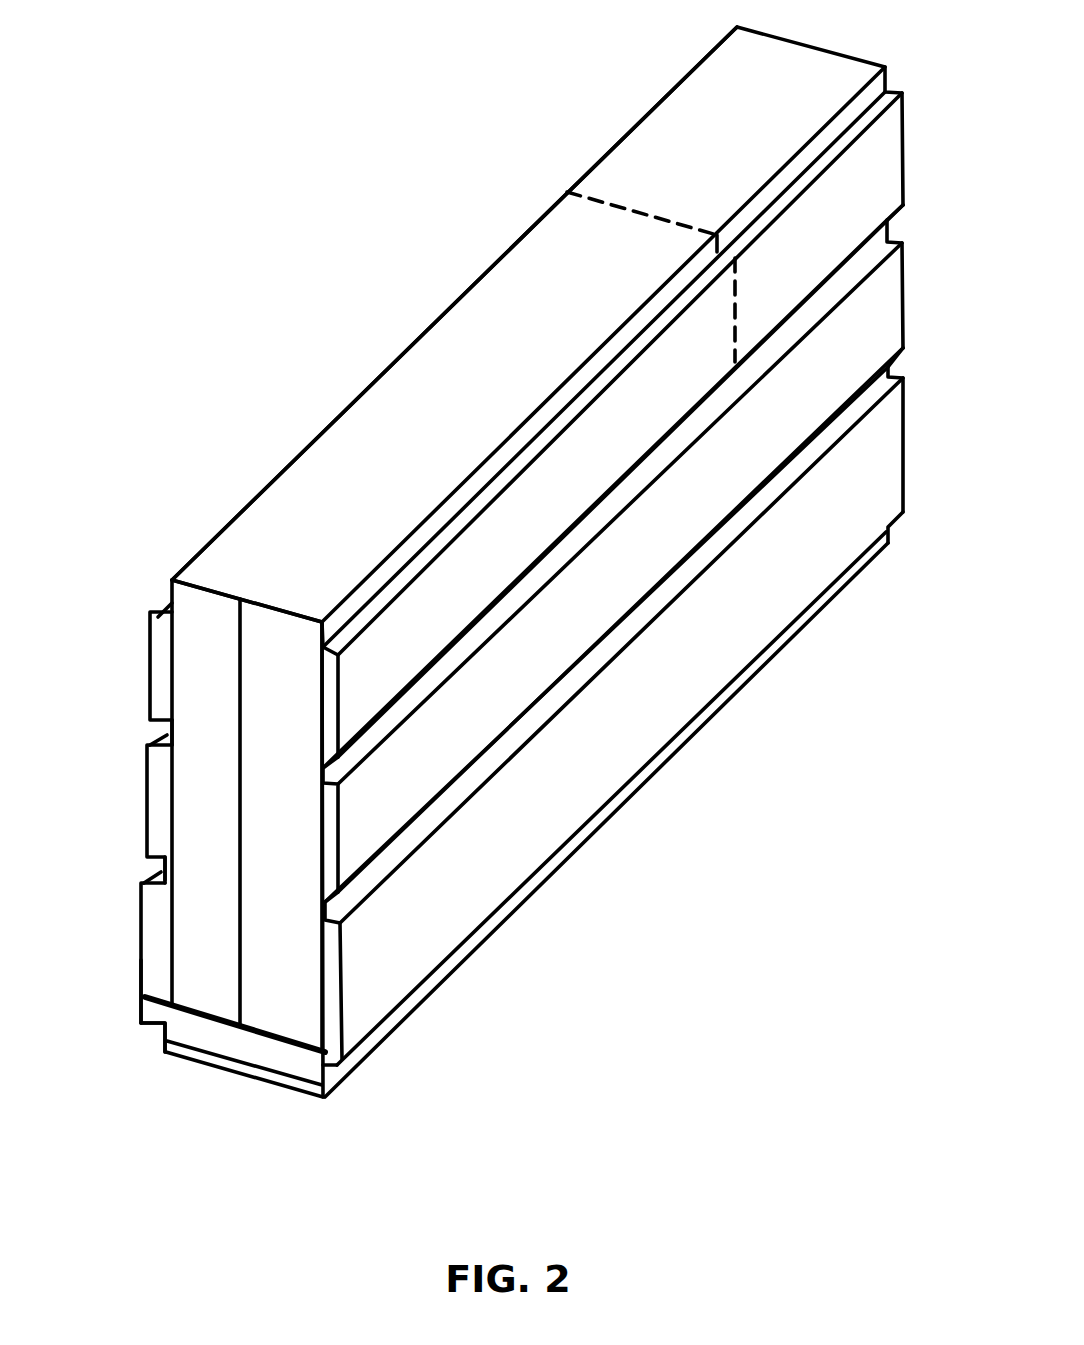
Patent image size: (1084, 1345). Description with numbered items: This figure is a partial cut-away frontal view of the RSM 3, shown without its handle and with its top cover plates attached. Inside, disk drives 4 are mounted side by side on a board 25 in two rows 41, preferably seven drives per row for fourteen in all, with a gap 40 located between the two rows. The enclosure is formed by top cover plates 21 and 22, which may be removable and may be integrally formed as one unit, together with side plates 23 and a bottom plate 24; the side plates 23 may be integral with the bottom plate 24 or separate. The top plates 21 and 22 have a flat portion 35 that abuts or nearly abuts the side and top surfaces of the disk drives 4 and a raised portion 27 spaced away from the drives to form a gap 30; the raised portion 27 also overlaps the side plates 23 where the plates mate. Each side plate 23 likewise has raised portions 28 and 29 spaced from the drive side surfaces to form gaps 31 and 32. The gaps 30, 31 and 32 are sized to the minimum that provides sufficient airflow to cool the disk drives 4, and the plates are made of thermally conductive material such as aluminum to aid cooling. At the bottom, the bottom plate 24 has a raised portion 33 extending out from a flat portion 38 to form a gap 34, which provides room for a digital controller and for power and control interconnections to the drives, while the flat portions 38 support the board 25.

The RSM 3 is at (278, 478).
The disk drive 4 is at (273, 647).
The top cover plate 21 is at (375, 378).
The top cover plate 22 is at (638, 118).
The side plate 23 is at (517, 693).
The bottom plate 24 is at (277, 1085).
The board 25 is at (252, 1027).
The raised portion 27 is at (150, 660).
The raised portion 28 is at (140, 800).
The raised portion 29 is at (145, 955).
The gap 30 is at (157, 640).
The gap 31 is at (155, 775).
The gap 32 is at (148, 923).
The raised portion 33 is at (212, 1060).
The gap 34 is at (183, 1030).
The flat portion 35 is at (165, 603).
The flat portion 38 is at (340, 1070).
The gap 40 is at (243, 887).
The row 41 is at (220, 613).